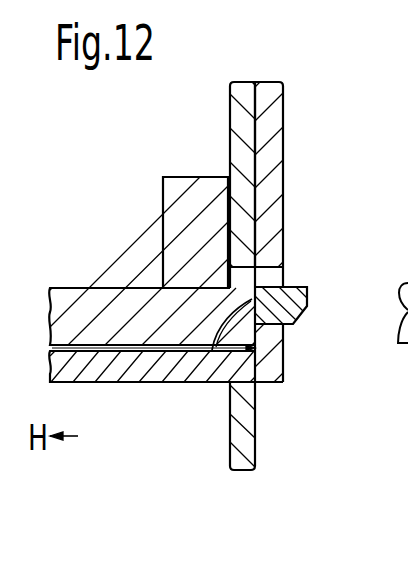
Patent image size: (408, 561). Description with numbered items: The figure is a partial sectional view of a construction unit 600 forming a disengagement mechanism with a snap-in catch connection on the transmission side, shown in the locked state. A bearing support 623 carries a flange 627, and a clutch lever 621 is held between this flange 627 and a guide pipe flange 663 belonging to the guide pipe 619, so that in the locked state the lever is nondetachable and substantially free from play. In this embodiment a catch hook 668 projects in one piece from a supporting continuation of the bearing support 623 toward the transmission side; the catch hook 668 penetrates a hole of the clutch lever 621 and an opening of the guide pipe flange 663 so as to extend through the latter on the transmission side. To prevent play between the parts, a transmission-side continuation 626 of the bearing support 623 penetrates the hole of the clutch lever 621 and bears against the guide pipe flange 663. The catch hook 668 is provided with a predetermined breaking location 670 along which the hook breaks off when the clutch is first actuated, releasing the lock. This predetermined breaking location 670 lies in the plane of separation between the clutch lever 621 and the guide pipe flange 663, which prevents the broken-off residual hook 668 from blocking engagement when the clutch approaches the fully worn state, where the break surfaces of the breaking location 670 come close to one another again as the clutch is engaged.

The construction unit 600 is at (269, 451).
The guide pipe 619 is at (126, 366).
The clutch lever 621 is at (241, 82).
The bearing support 623 is at (110, 288).
The transmission-side continuation 626 is at (284, 384).
The flange 627 is at (183, 177).
The guide pipe flange 663 is at (281, 108).
The catch hook 668 is at (297, 287).
The predetermined breaking location 670 is at (212, 350).